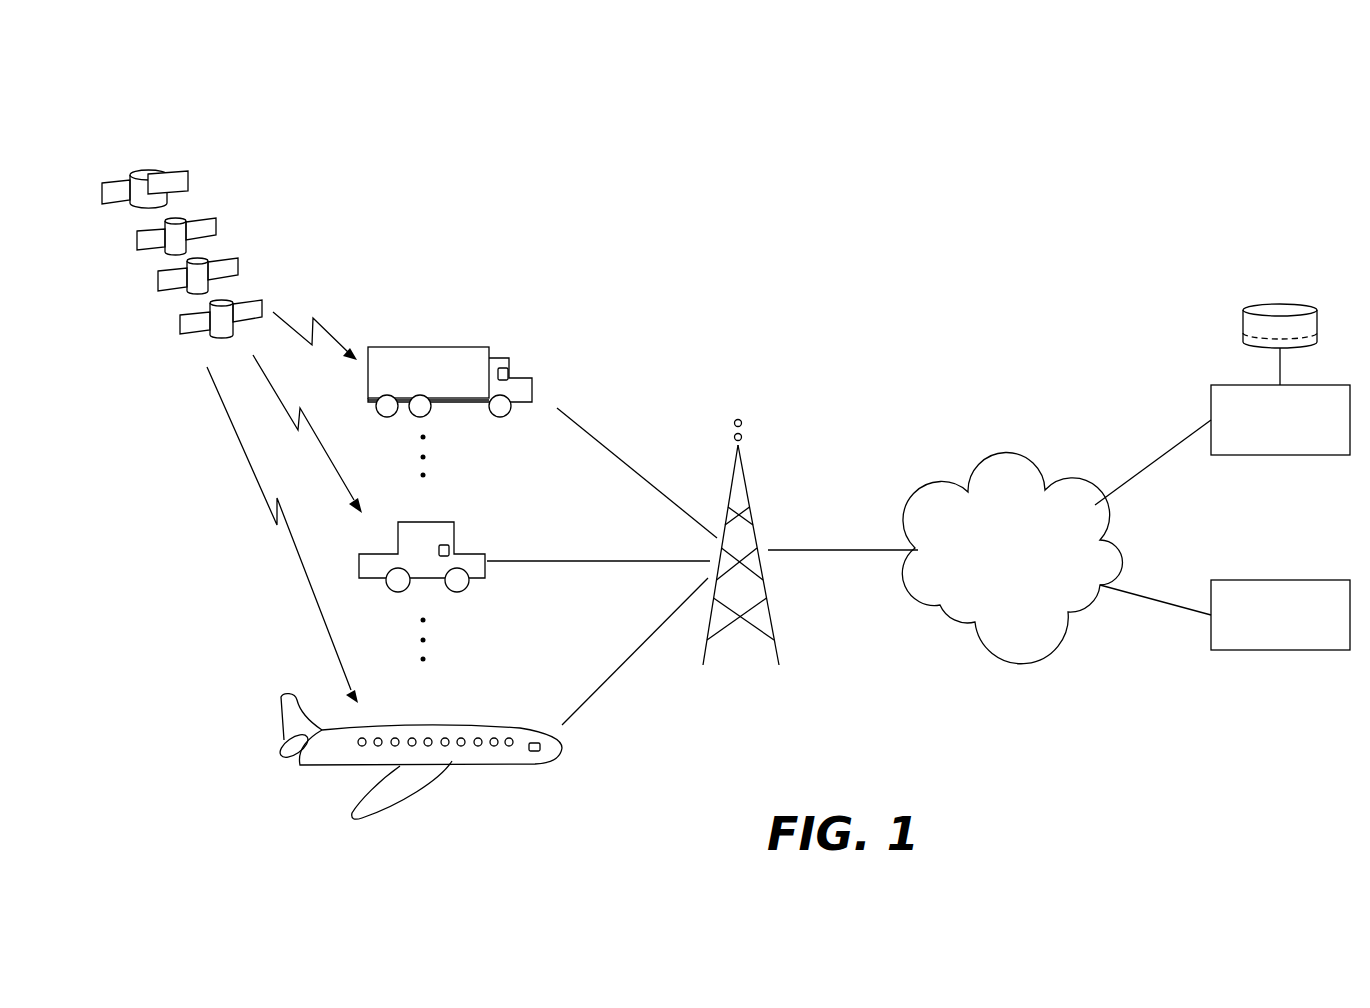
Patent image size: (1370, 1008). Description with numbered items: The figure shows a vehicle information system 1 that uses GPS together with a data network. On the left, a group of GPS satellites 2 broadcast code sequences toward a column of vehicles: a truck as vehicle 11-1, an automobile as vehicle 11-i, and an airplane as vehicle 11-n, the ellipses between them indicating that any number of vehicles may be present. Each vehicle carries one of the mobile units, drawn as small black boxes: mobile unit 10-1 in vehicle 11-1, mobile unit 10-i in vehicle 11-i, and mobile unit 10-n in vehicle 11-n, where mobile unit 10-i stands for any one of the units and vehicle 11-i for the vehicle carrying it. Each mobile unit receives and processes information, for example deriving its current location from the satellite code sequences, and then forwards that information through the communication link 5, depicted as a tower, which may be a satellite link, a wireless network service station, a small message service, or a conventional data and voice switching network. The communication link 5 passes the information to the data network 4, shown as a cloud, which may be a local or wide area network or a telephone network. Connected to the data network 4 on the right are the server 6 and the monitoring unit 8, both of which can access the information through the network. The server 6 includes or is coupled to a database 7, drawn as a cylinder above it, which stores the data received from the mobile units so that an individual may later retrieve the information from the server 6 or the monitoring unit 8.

The vehicle information system 1 is at (933, 242).
The GPS satellites 2 is at (210, 156).
The data network 4 is at (1019, 562).
The communication link 5 is at (738, 419).
The server 6 is at (1288, 438).
The database 7 is at (1318, 322).
The monitoring unit 8 is at (1288, 633).
The vehicle 11-1 is at (433, 350).
The mobile unit 10-1 is at (509, 371).
The vehicle 11-i is at (440, 526).
The mobile unit 10-i is at (450, 549).
The vehicle 11-n is at (452, 730).
The mobile unit 10-n is at (536, 742).